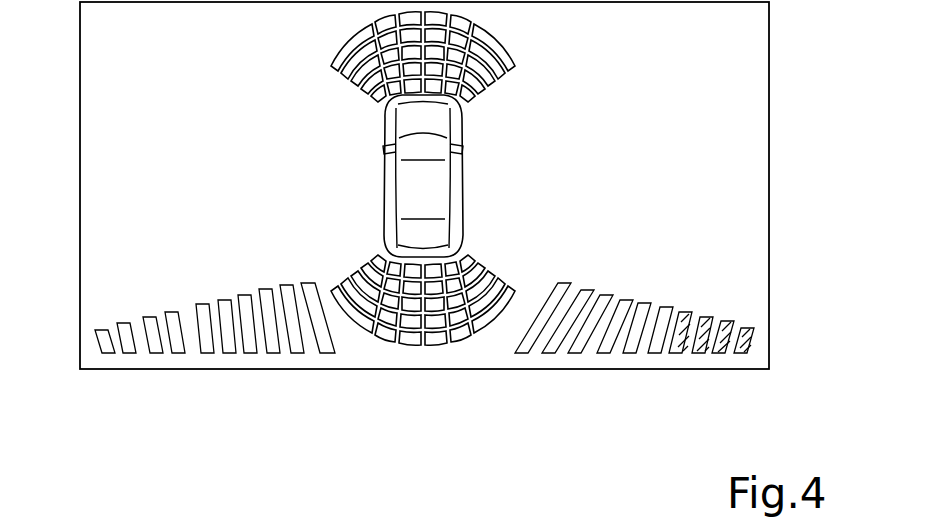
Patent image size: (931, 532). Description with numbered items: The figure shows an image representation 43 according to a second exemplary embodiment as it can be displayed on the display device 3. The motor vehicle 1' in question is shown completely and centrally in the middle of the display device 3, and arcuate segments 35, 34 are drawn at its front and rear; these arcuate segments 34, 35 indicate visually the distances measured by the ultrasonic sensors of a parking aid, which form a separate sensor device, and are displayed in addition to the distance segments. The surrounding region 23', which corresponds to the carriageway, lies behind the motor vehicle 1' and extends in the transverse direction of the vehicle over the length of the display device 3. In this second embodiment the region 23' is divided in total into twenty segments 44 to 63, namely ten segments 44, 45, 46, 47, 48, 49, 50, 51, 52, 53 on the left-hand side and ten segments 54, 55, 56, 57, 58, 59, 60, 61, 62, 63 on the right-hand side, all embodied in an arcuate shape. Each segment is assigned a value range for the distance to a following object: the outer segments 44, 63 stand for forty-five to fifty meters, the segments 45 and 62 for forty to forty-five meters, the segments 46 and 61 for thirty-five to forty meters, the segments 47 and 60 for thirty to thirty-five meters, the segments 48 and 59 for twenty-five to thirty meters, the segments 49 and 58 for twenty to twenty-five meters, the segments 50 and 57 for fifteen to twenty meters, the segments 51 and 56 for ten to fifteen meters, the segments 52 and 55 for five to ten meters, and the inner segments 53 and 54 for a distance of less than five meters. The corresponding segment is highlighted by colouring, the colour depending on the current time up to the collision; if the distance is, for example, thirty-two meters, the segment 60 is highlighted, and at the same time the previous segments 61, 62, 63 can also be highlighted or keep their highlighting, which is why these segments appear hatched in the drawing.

The display device 3 is at (769, 93).
The image representation 43 is at (714, 196).
The arcuate segment 35 is at (495, 97).
The arcuate segment 34 is at (507, 273).
The motor vehicle 1' is at (463, 176).
The surrounding region 23' is at (217, 350).
The segment 44 is at (108, 354).
The segment 45 is at (129, 354).
The segment 46 is at (157, 354).
The segment 47 is at (180, 354).
The segment 48 is at (204, 354).
The segment 49 is at (228, 354).
The segment 50 is at (250, 354).
The segment 51 is at (273, 354).
The segment 52 is at (297, 354).
The segment 53 is at (326, 354).
The segment 54 is at (520, 354).
The segment 55 is at (547, 354).
The segment 56 is at (575, 354).
The segment 57 is at (602, 354).
The segment 58 is at (630, 354).
The segment 59 is at (655, 354).
The segment 60 is at (676, 354).
The segment 61 is at (699, 354).
The segment 62 is at (719, 354).
The segment 63 is at (741, 354).